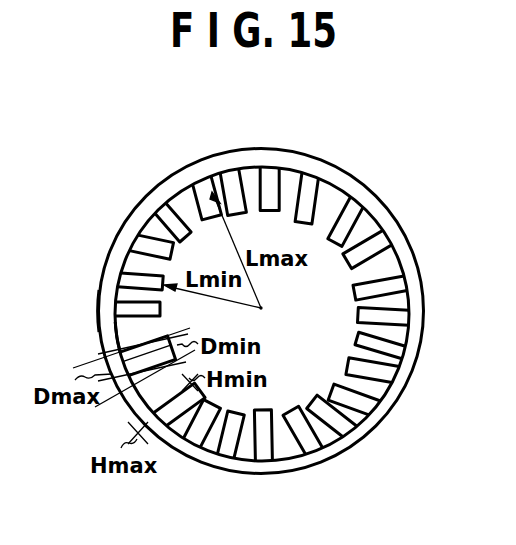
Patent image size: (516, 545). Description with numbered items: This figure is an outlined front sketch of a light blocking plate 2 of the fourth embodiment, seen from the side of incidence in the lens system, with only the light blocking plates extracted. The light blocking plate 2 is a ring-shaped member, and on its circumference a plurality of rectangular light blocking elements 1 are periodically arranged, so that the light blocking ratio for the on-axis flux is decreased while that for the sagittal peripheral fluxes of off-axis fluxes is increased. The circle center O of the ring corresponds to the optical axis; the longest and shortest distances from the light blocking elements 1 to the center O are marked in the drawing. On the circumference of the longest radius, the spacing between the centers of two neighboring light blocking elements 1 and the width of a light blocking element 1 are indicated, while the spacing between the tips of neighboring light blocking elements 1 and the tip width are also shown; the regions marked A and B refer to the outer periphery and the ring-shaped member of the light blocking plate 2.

The light blocking element 1 is at (332, 202).
The light blocking plate 2 is at (313, 154).
The outer periphery A is at (98, 313).
The yoke inner boundary B is at (98, 345).
The circle center O is at (265, 310).